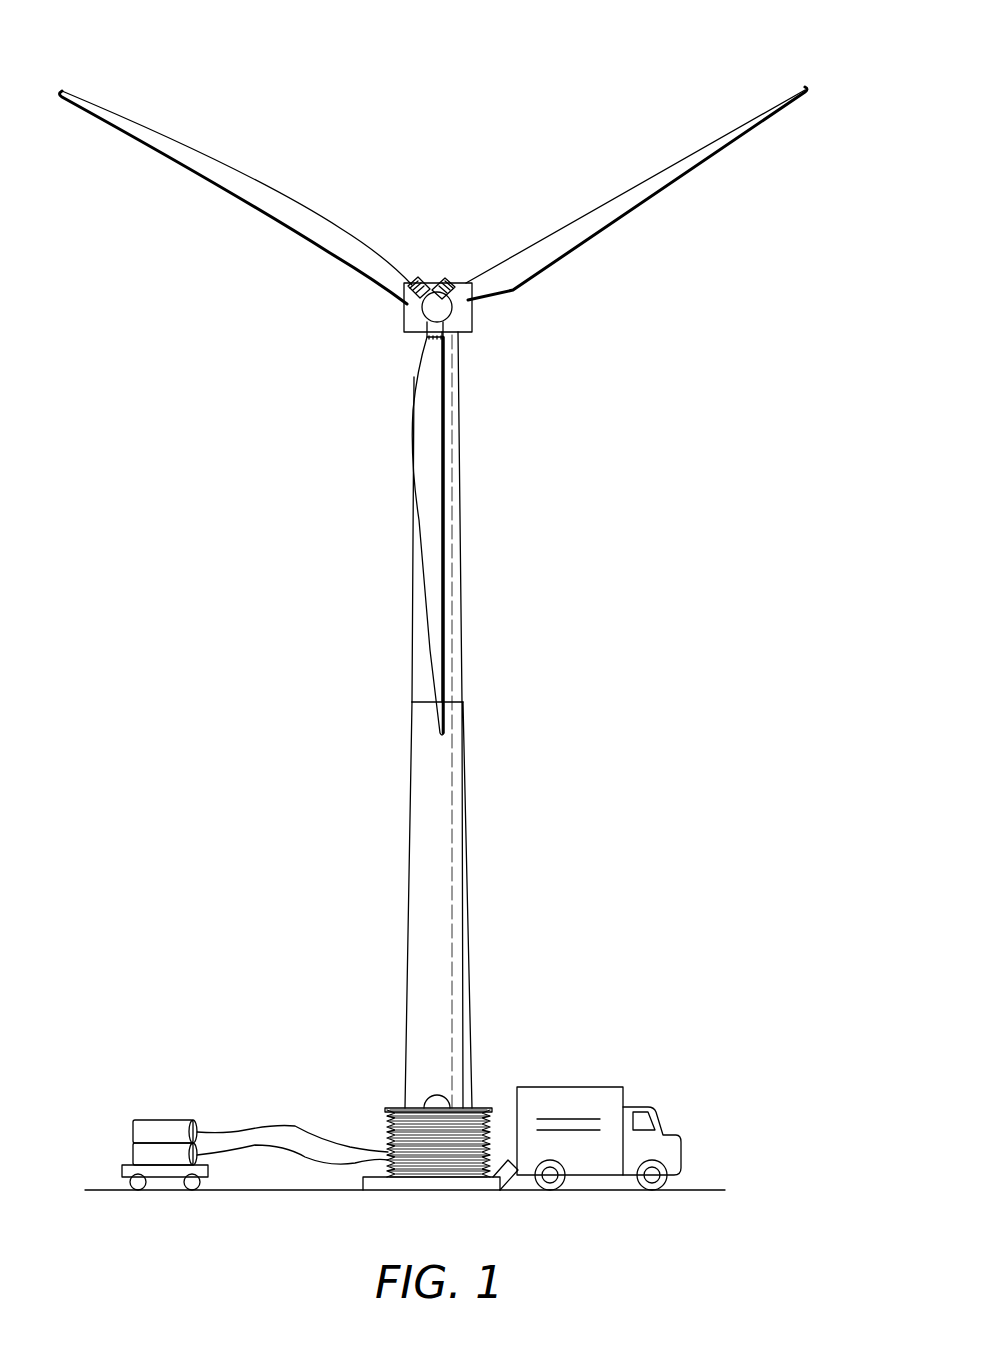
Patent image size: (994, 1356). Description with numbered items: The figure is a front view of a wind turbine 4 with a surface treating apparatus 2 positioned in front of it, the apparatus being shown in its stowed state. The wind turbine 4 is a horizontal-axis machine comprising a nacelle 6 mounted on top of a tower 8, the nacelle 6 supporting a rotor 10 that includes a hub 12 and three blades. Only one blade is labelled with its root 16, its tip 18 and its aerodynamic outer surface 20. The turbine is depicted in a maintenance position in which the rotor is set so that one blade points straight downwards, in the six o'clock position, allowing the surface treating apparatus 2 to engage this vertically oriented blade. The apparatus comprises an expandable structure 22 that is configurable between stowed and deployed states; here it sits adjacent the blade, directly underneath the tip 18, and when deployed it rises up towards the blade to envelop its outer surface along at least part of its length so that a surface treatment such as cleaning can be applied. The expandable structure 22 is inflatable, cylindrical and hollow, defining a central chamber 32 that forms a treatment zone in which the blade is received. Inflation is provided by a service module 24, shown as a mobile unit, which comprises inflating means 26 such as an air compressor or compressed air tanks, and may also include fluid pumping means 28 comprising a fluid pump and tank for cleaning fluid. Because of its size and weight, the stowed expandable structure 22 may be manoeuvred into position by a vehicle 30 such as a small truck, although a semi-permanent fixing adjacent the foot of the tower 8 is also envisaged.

The surface treating apparatus 2 is at (616, 986).
The wind turbine 4 is at (587, 57).
The nacelle 6 is at (432, 282).
The tower 8 is at (456, 822).
The rotor 10 is at (434, 411).
The hub 12 is at (450, 310).
The root 16 is at (444, 352).
The tip 18 is at (448, 734).
The aerodynamic outer surface 20 is at (453, 560).
The expandable structure 22 is at (441, 1147).
The service module 24 is at (231, 1069).
The inflating means 26 is at (137, 1157).
The fluid pumping means 28 is at (158, 1127).
The vehicle 30 is at (650, 1107).
The central chamber 32 is at (482, 1108).